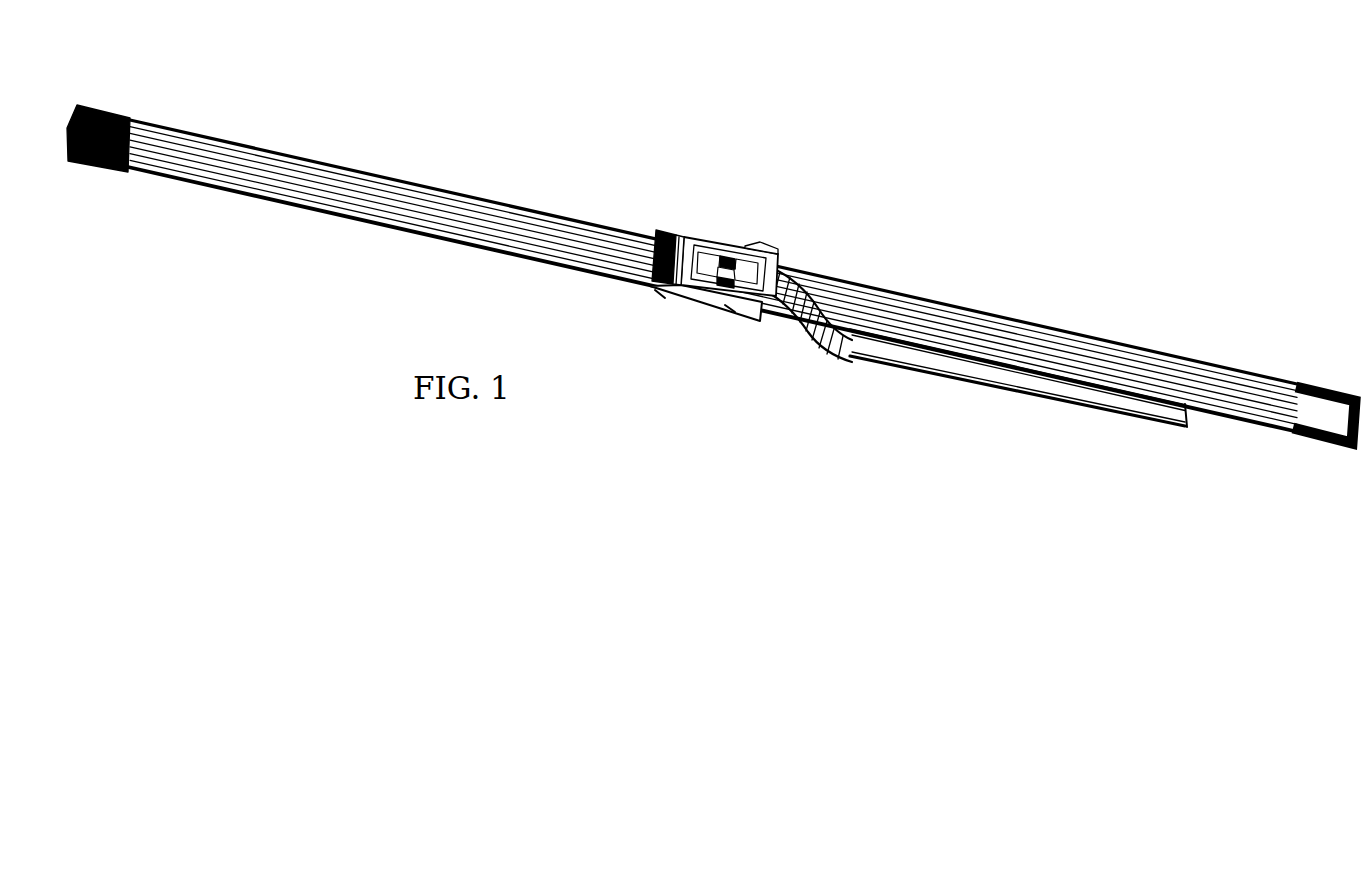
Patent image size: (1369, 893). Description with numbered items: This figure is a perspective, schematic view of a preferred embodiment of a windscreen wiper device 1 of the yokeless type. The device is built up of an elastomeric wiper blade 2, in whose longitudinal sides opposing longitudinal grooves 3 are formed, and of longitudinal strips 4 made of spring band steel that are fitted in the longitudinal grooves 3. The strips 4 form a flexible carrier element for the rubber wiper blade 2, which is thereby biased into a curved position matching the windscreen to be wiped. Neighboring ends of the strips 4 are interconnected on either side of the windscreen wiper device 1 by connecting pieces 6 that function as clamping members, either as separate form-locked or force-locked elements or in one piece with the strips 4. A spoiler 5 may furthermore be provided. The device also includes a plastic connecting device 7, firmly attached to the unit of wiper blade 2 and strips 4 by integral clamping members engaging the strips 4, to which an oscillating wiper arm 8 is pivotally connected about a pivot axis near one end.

The windscreen wiper device 1 is at (713, 305).
The wiper blade 2 is at (342, 216).
The longitudinal grooves 3 is at (1203, 413).
The longitudinal strips 4 is at (1243, 420).
The spoiler 5 is at (440, 202).
The connecting pieces 6 is at (102, 112).
The connecting device 7 is at (793, 168).
The wiper arm 8 is at (743, 277).